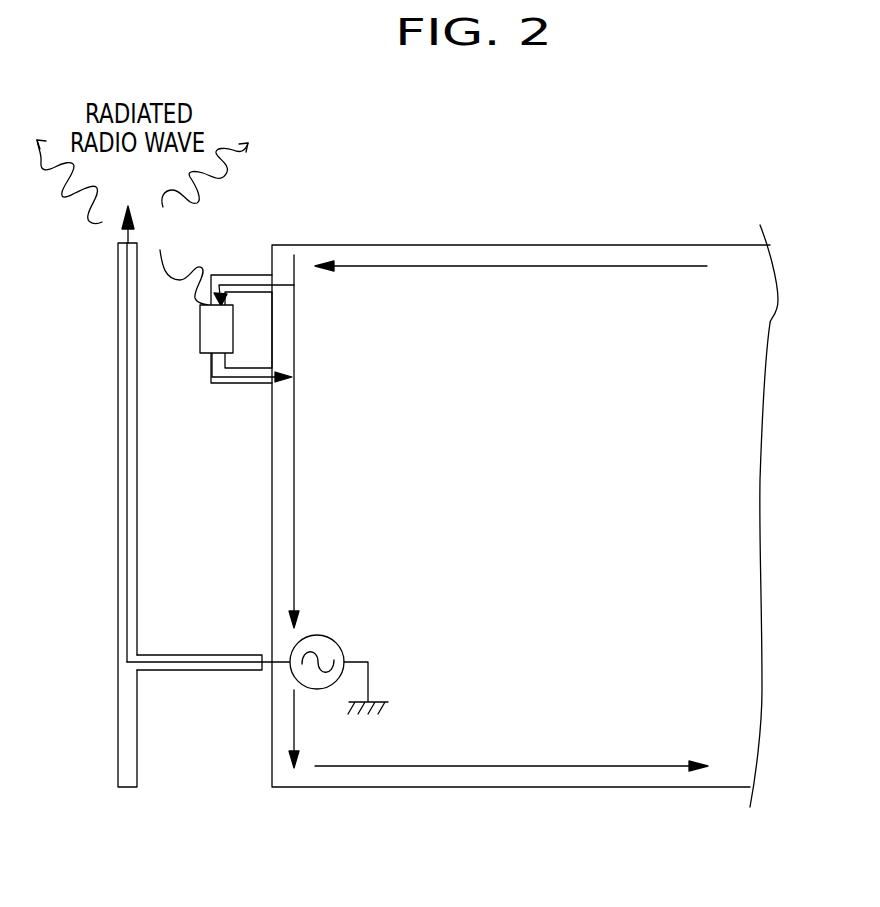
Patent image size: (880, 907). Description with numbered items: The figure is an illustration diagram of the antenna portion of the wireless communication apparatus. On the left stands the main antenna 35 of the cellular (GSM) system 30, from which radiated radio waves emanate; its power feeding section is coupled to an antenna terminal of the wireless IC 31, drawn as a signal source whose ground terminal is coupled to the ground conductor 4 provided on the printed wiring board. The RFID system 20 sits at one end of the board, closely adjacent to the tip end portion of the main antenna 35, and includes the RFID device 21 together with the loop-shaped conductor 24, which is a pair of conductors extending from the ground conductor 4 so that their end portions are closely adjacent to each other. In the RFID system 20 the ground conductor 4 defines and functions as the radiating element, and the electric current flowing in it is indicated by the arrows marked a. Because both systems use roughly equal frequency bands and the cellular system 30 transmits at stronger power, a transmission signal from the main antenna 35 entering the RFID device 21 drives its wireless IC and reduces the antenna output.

The ground conductor 4 is at (495, 243).
The RFID system 20 is at (215, 388).
The RFID device 21 is at (200, 338).
The loop-shaped conductor 24 is at (238, 272).
The cellular (GSM) system 30 is at (227, 683).
The wireless IC 31 is at (332, 633).
The main antenna 35 is at (118, 542).